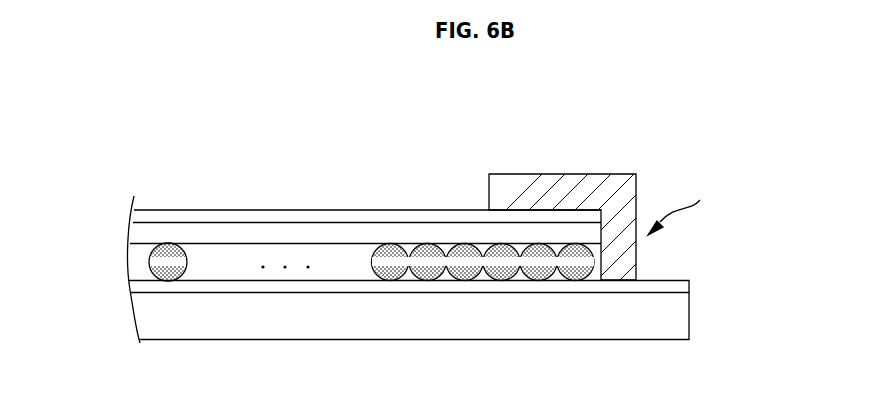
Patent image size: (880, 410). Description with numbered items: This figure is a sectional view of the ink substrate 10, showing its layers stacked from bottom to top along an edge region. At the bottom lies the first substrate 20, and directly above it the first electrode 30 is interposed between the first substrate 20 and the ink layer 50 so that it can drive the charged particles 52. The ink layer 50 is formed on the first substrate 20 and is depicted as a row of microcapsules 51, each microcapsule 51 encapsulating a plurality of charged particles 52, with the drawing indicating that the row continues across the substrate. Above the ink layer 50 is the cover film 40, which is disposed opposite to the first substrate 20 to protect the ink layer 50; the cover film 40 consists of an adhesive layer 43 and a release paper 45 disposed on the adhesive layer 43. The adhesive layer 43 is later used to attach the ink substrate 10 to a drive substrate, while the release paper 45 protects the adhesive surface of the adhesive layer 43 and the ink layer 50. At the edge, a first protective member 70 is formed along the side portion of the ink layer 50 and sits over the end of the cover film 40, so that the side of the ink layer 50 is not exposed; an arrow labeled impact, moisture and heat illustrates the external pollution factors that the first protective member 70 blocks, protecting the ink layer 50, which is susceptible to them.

The ink substrate 10 is at (167, 110).
The first substrate 20 is at (543, 322).
The first electrode 30 is at (457, 285).
The cover film 40 is at (307, 157).
The adhesive layer 43 is at (296, 232).
The release paper 45 is at (256, 217).
The ink layer 50 is at (136, 259).
The microcapsule 51 is at (372, 258).
The charged particles 52 is at (428, 244).
The first protective member 70 is at (557, 185).